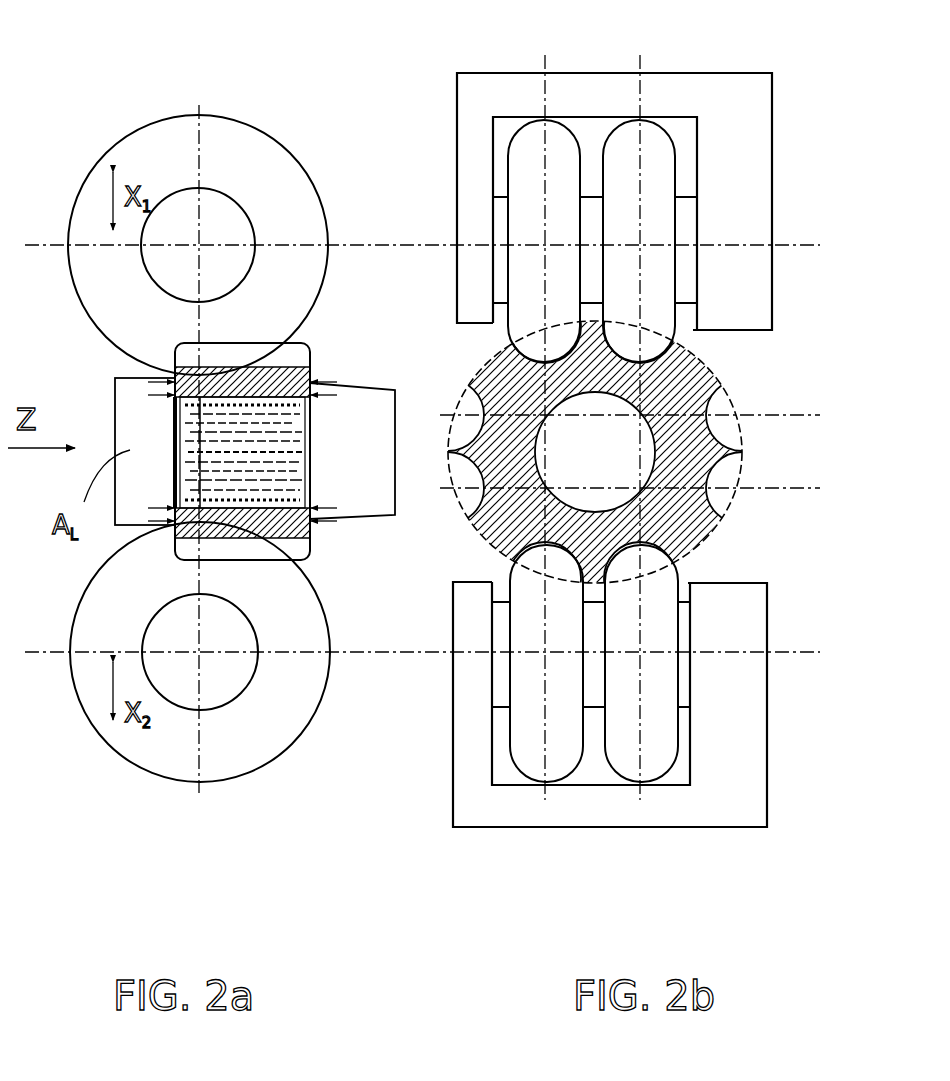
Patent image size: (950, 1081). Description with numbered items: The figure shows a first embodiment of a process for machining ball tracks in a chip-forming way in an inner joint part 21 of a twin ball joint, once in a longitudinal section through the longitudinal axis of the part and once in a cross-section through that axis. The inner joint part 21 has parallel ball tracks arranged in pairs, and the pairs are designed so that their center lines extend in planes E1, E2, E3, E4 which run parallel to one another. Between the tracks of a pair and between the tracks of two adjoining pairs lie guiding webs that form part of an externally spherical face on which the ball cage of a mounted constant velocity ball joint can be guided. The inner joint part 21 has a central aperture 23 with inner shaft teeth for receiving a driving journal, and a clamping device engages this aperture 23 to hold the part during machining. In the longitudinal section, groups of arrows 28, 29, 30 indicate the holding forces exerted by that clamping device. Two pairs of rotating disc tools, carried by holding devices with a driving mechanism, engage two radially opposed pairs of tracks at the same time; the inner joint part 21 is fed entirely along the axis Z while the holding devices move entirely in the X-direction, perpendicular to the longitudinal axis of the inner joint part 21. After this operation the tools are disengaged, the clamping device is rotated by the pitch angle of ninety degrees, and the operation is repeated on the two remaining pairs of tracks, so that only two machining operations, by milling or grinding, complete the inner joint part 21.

In FIG. 2A, the inner joint part 21 is at (233, 422).
In FIG. 2B, the inner joint part 21 is at (641, 452).
In FIG. 2B, the central aperture 23 is at (595, 452).
In FIG. 2A, the group of arrows 28 is at (290, 480).
In FIG. 2A, the group of arrows 29 is at (163, 380).
In FIG. 2A, the group of arrows 30 is at (327, 382).
In FIG. 2B, the plane E1 is at (545, 82).
In FIG. 2B, the plane E2 is at (641, 92).
In FIG. 2B, the plane E3 is at (803, 412).
In FIG. 2B, the plane E4 is at (803, 485).